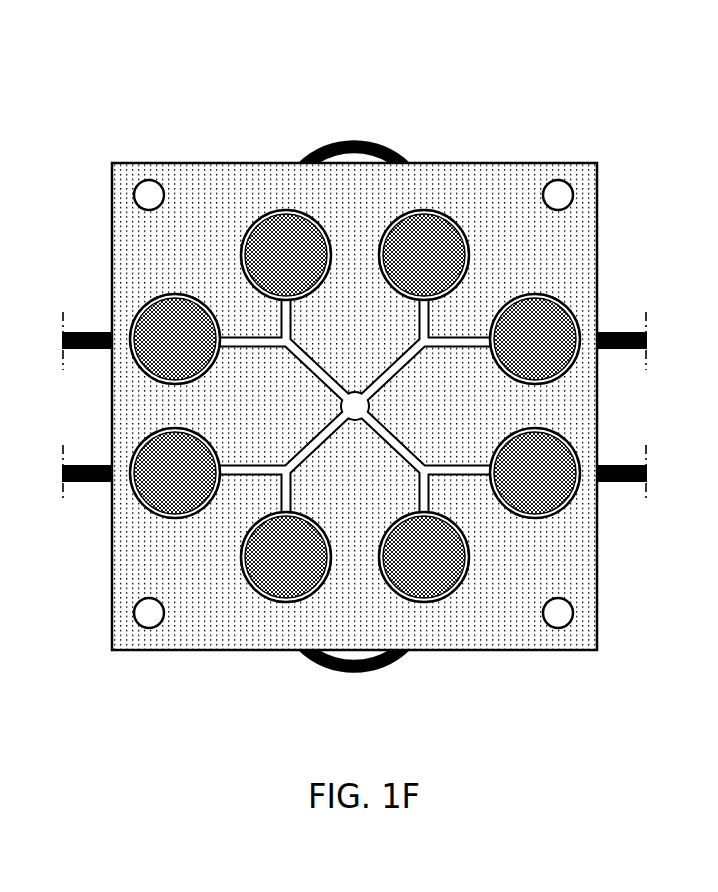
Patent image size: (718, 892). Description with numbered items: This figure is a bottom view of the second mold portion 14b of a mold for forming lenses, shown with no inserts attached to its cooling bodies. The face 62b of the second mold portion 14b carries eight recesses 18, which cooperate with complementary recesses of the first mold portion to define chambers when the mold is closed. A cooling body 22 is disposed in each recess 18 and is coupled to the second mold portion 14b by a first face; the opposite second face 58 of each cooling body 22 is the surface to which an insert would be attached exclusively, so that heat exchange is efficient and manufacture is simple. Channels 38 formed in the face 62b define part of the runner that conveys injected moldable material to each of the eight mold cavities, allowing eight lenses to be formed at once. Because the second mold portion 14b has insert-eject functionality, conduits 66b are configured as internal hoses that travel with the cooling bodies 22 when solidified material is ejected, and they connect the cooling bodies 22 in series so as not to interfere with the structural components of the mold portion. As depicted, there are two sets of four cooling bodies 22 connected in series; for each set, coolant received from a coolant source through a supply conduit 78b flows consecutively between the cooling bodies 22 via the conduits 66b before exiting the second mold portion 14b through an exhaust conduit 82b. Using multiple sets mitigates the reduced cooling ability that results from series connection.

The second mold portion 14b is at (359, 384).
The recess 18 is at (355, 397).
The cooling body 22 is at (428, 240).
The channel 38 is at (238, 337).
The second face 58 is at (427, 570).
The face 62b is at (202, 615).
The conduit 66b is at (350, 142).
The supply conduit 78b is at (70, 332).
The exhaust conduit 82b is at (612, 332).